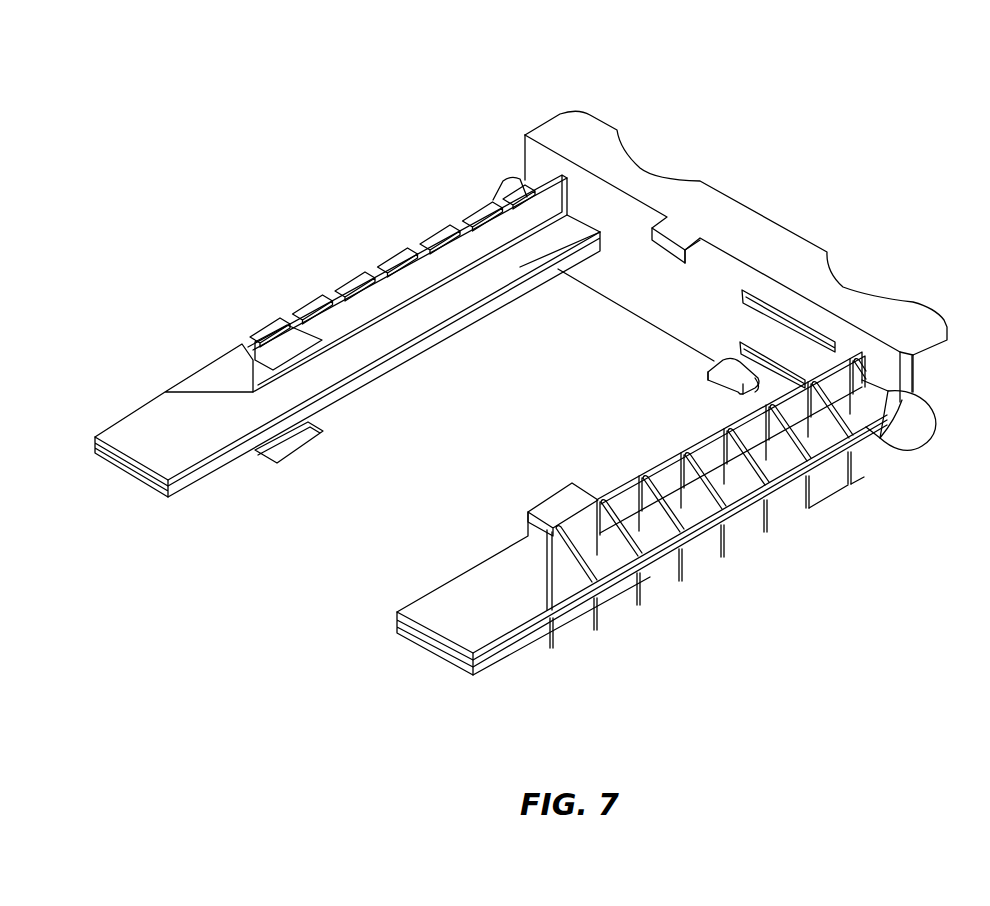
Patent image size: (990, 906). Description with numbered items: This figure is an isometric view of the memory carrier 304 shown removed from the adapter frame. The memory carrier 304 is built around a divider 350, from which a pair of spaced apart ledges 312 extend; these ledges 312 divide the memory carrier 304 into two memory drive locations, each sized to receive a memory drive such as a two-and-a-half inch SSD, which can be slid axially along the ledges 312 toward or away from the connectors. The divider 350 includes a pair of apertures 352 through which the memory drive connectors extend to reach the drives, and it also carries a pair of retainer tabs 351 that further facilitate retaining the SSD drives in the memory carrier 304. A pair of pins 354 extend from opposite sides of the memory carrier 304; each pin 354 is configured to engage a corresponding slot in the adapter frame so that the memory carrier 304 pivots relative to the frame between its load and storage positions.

The memory carrier 304 is at (872, 85).
The ledges 312 is at (172, 458).
The divider 350 is at (560, 112).
The retainer tabs 351 is at (660, 245).
The apertures 352 is at (798, 372).
The pins 354 is at (497, 182).